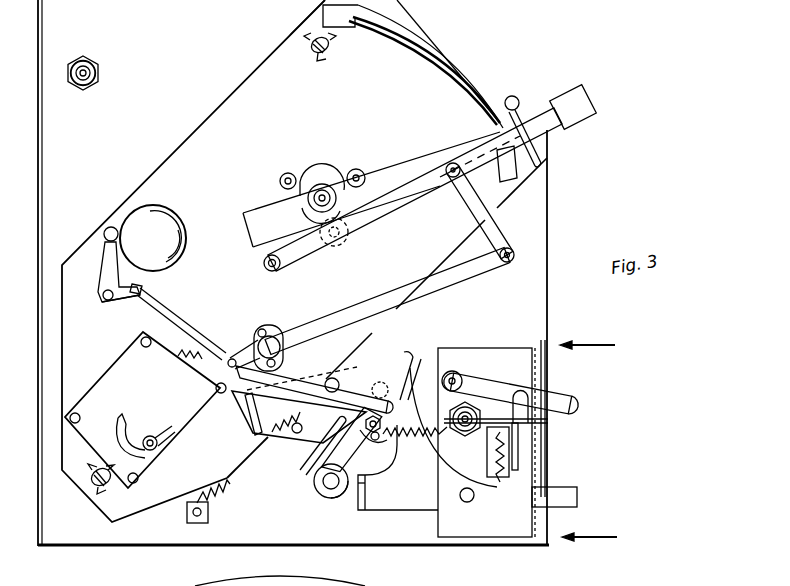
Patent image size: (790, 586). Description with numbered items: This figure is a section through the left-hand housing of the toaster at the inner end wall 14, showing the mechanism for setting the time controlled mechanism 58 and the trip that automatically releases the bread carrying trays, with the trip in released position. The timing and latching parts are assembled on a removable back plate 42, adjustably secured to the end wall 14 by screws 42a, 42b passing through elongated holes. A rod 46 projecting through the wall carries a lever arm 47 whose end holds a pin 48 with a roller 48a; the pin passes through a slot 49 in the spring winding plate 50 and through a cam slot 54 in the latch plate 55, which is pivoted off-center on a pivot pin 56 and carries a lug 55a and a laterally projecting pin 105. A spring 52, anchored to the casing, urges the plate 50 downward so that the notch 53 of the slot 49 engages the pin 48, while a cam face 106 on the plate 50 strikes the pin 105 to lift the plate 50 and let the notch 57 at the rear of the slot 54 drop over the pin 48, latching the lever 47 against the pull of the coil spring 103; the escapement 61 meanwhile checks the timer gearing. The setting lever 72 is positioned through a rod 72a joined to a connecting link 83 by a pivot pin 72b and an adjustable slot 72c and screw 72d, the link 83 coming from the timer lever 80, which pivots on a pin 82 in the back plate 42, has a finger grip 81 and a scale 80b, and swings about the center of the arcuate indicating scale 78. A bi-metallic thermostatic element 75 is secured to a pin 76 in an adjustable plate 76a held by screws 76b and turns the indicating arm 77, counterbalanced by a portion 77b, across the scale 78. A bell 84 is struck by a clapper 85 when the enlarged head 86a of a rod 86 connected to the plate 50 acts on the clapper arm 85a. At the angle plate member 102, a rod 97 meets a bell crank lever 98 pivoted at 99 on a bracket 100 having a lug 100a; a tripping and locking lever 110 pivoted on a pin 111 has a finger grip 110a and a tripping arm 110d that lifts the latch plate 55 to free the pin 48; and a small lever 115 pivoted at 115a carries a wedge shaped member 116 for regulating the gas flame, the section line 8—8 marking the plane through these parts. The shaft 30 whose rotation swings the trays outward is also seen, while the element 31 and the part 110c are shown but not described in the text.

The section line 8- 8 is at (600, 443).
The inner end wall 14 is at (304, 261).
The shaft 30 is at (90, 74).
The stud 31 is at (89, 60).
The removable back plate 42 is at (299, 48).
The screw 42a is at (320, 53).
The screw 42b is at (100, 486).
The rod 46 is at (322, 483).
The lever arm 47 is at (346, 493).
The pin 48 is at (382, 431).
The roller 48a is at (348, 452).
The slot 49 is at (315, 445).
The spring winding plate 50 is at (299, 405).
The spring 52 is at (220, 495).
The notch 53 is at (385, 431).
The cam slot 54 is at (362, 395).
The latch plate 55 is at (326, 383).
The projecting lug 55a is at (249, 414).
The pivot pin 56 is at (252, 430).
The notch 57 is at (337, 378).
The time controlled mechanism 58 is at (142, 410).
The escapement 61 is at (148, 434).
The setting lever 72 is at (261, 309).
The rod 72a is at (468, 268).
The pivot pin 72b is at (228, 350).
The adjustable slot 72c is at (266, 330).
The screw 72d is at (298, 342).
The thermostatic element 75 is at (356, 170).
The pin 76 is at (320, 176).
The adjustable plate 76a is at (350, 236).
The screws 76b is at (282, 177).
The indicating arm 77 is at (432, 136).
The counterbalancing portion 77b is at (242, 208).
The arcuate indicating scale 78 is at (430, 34).
The timer lever 80 is at (398, 205).
The scale 80b is at (511, 96).
The finger grip portion 81 is at (597, 104).
The pin 82 is at (263, 263).
The connecting link 83 is at (495, 226).
The bell 84 is at (153, 238).
The bell clapper 85 is at (104, 265).
The arm 85a is at (138, 315).
The small rod 86 is at (170, 302).
The enlarged head 86a is at (142, 285).
The rod 97 is at (410, 427).
The bell crank lever 98 is at (512, 400).
The pivot 99 is at (470, 437).
The bracket 100 is at (447, 467).
The laterally projecting lug 100a is at (546, 450).
The angle plate member 102 is at (510, 530).
The coil spring 103 is at (399, 450).
The pin 105 is at (296, 433).
The cam face 106 is at (314, 414).
The tripping and locking lever 110 is at (438, 502).
The finger grip 110a is at (577, 497).
The bracket arm 110c is at (400, 336).
The tripping arm 110d is at (365, 483).
The pivot pin 111 is at (467, 502).
The lever 115 is at (570, 405).
The pivot 115a is at (458, 376).
The wedge shaped member 116 is at (518, 436).